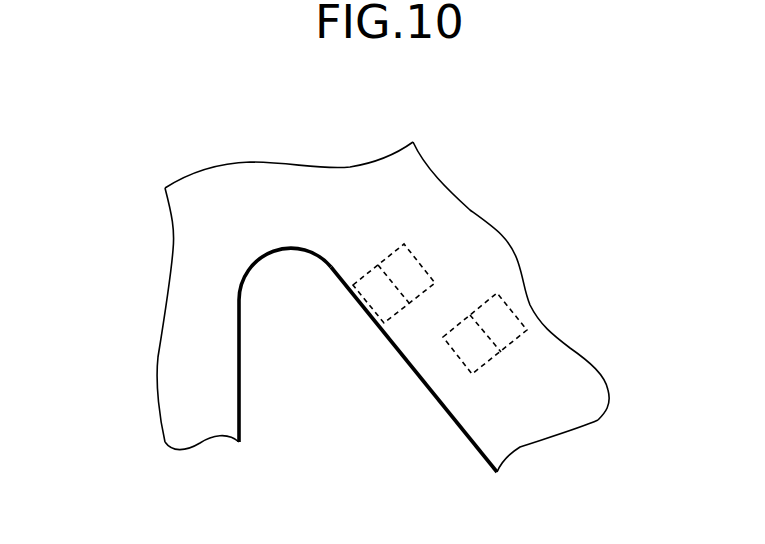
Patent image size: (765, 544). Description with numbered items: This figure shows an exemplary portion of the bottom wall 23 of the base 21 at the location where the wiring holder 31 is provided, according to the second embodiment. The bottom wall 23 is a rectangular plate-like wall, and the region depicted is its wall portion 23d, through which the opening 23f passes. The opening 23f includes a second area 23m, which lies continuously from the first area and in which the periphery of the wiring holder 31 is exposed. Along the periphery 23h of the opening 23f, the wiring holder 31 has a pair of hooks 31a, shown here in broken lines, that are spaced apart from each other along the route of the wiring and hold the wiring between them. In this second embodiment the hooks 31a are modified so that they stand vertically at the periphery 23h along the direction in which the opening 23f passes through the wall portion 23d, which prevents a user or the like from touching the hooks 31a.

The base 21 is at (580, 415).
The bottom wall 23 is at (544, 307).
The wall portion 23d is at (558, 366).
The opening 23f is at (240, 378).
The periphery 23h is at (475, 449).
The second area 23m is at (285, 295).
The wiring holder 31 is at (494, 262).
The hooks 31a is at (425, 267).